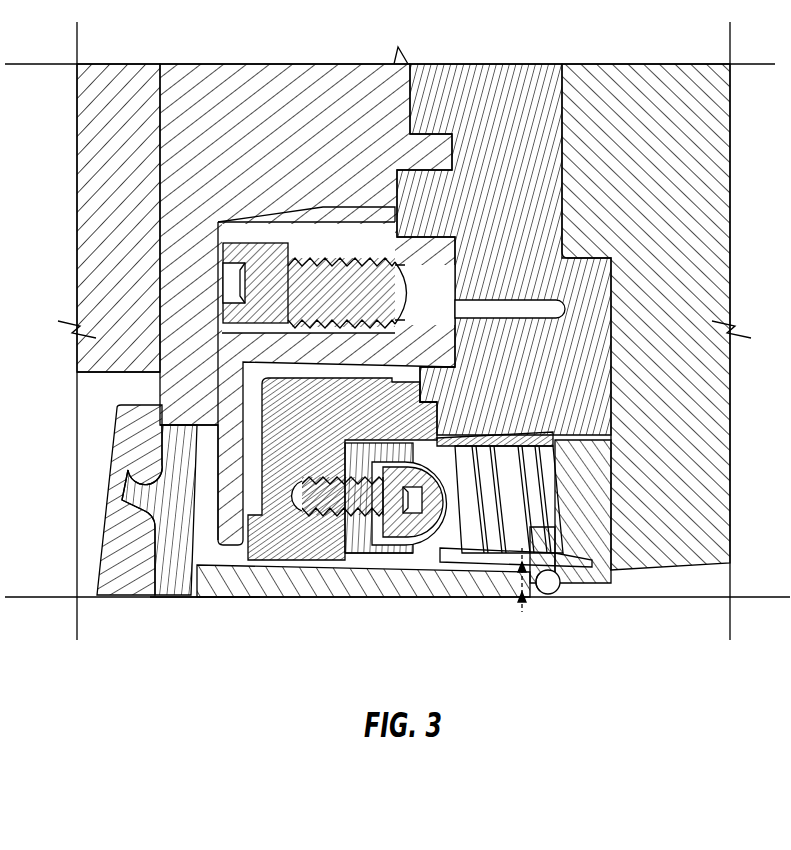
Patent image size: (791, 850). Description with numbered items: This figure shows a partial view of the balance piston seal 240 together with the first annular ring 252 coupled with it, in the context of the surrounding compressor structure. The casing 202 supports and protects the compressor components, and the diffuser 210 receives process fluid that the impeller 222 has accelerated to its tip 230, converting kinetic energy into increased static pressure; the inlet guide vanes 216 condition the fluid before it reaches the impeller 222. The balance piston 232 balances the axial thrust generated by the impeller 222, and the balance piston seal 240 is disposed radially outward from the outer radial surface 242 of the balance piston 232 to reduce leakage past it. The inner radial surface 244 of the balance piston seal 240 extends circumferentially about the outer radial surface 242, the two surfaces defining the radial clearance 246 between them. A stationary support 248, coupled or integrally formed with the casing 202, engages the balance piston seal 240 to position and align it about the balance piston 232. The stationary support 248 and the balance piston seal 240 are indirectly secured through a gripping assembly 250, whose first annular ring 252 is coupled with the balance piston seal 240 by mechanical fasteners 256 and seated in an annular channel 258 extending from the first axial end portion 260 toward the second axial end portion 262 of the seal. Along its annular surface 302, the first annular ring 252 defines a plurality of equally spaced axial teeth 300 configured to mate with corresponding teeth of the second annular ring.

The casing 202 is at (612, 82).
The diffuser 210 is at (162, 92).
The inlet guide vanes 216 is at (135, 487).
The impeller 222 is at (163, 597).
The tip 230 is at (168, 425).
The balance piston 232 is at (210, 597).
The balance piston seal 240 is at (333, 380).
The outer radial surface 242 is at (445, 580).
The inner radial surface 244 is at (497, 583).
The radial clearance 246 is at (522, 608).
The stationary support 248 is at (462, 77).
The gripping assembly 250 is at (408, 556).
The first annular ring 252 is at (357, 533).
The mechanical fasteners 256 is at (318, 497).
The annular channel 258 is at (345, 445).
The first axial end portion 260 is at (427, 407).
The second axial end portion 262 is at (262, 368).
The teeth 300 is at (495, 508).
The annular surface 302 is at (438, 455).